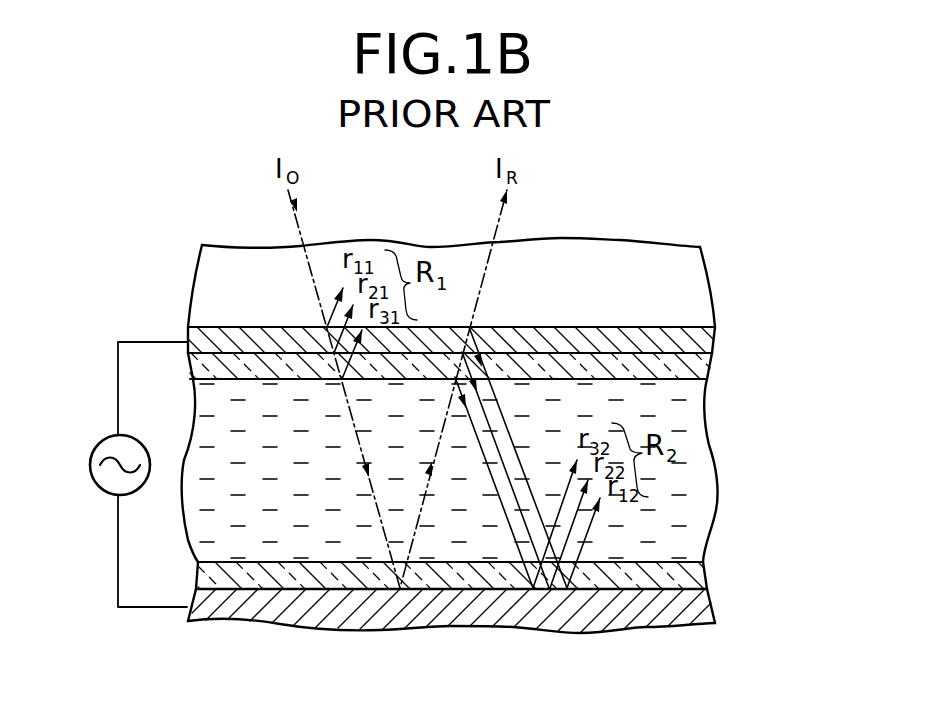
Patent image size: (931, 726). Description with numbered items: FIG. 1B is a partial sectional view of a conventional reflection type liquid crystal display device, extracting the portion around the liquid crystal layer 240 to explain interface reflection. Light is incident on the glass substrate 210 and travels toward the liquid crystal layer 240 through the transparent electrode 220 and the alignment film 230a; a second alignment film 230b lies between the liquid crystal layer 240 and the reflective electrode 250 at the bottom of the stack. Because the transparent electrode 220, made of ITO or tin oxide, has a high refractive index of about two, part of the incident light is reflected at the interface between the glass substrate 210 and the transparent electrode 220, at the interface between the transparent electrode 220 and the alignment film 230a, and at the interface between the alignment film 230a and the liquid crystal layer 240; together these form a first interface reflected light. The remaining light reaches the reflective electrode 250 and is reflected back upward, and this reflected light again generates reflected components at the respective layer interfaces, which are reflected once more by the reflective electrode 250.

The glass substrate 210 is at (693, 277).
The transparent electrode 220 is at (706, 337).
The alignment film 230a is at (702, 370).
The liquid crystal layer 240 is at (696, 495).
The lower alignment layer 230b is at (701, 568).
The reflective electrode 250 is at (700, 610).